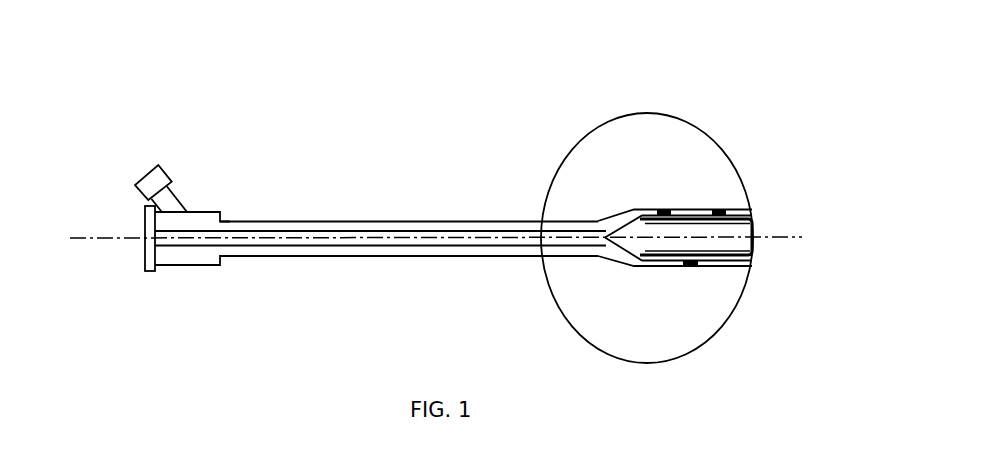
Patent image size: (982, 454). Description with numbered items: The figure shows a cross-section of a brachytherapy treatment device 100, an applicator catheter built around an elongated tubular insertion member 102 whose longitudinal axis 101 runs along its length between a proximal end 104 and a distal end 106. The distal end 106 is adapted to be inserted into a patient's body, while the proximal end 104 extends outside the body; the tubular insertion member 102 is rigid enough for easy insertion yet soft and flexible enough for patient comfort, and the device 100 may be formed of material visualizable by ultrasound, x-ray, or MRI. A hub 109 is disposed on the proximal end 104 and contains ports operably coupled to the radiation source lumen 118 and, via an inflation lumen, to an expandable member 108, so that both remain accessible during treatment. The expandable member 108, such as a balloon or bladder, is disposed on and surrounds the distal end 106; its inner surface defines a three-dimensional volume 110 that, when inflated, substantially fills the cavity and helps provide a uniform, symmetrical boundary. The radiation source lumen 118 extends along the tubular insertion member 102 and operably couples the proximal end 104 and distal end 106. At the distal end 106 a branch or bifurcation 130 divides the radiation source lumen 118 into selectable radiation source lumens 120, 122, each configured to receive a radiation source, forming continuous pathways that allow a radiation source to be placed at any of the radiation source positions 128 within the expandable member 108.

The brachytherapy treatment device 100 is at (398, 43).
The longitudinal axis 101 is at (769, 235).
The tubular insertion member 102 is at (306, 220).
The proximal end 104 is at (205, 292).
The distal end 106 is at (776, 274).
The expandable member 108 is at (708, 130).
The hub 109 is at (206, 176).
The three-dimensional volume 110 is at (665, 151).
The radiation source lumen 118 is at (513, 229).
The selectable radiation source lumen 120 is at (641, 209).
The selectable radiation source lumen 122 is at (650, 267).
The radiation source positions 128 is at (716, 210).
The branch or bifurcation 130 is at (595, 227).